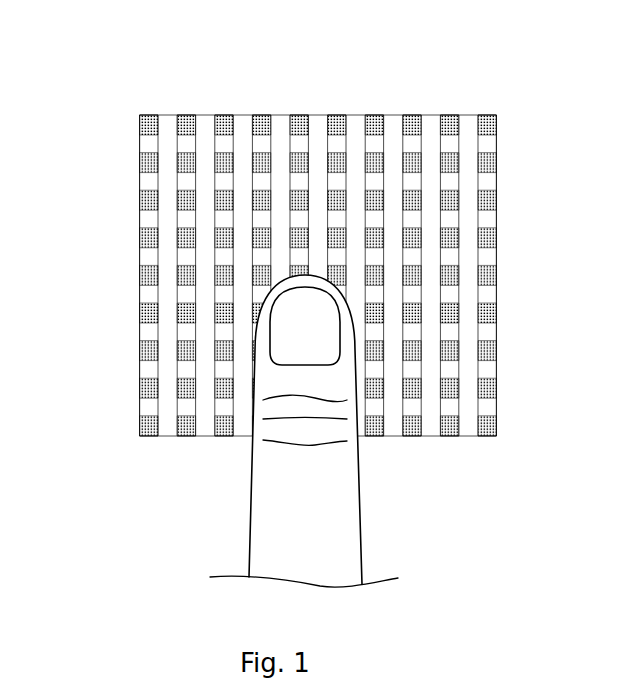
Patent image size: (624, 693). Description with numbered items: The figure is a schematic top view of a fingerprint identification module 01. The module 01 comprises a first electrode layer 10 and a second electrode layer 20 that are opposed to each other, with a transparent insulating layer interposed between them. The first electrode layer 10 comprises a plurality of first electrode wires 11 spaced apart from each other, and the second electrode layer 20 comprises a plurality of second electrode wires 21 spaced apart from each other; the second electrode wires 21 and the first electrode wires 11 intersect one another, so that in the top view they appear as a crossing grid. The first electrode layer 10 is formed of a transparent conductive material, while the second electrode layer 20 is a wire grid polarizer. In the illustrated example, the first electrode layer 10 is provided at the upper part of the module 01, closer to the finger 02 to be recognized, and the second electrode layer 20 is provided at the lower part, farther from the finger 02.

The fingerprint identification module 01 is at (76, 20).
The first electrode layer 10 is at (523, 58).
The first electrode wires 11 is at (170, 123).
The second electrode layer 20 is at (65, 115).
The second electrode wires 21 is at (147, 121).
The finger 02 is at (325, 518).